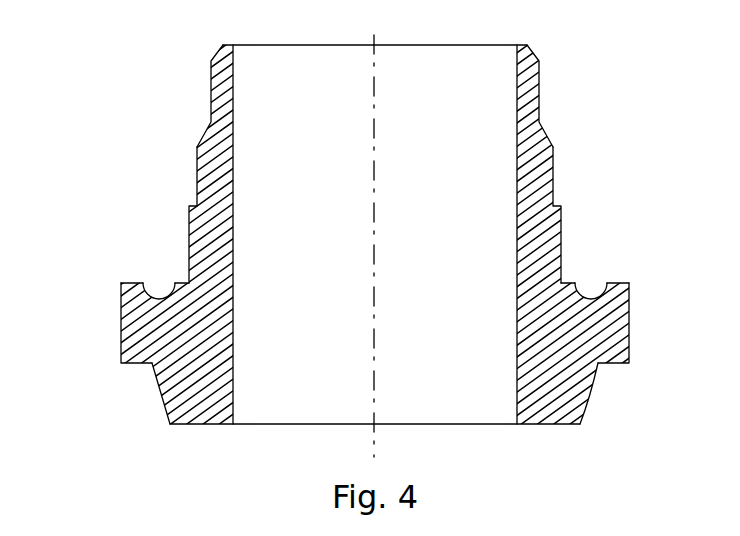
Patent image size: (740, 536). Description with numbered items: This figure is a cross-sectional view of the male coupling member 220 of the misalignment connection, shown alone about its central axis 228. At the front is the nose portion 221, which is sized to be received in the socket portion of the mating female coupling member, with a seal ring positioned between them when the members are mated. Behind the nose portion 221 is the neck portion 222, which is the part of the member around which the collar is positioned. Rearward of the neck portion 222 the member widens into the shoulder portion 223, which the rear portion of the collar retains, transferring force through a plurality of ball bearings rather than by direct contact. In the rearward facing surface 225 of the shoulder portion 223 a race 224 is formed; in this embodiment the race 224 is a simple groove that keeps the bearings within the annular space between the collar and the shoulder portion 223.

The male coupling member 220 is at (150, 121).
The nose portion 221 is at (150, 400).
The neck portion 222 is at (181, 223).
The shoulder portion 223 is at (121, 337).
The race 224 is at (162, 281).
The rearward facing surface 225 is at (130, 280).
The axis of male coupling member 228 is at (374, 205).